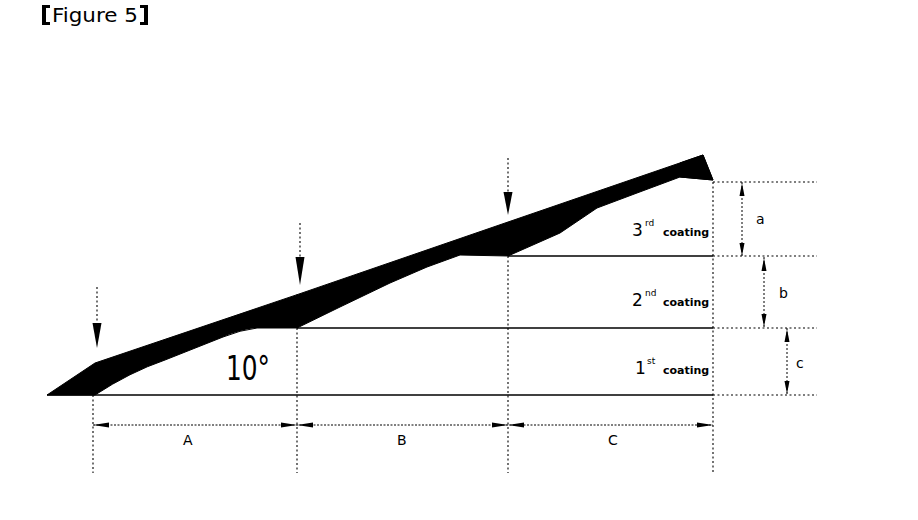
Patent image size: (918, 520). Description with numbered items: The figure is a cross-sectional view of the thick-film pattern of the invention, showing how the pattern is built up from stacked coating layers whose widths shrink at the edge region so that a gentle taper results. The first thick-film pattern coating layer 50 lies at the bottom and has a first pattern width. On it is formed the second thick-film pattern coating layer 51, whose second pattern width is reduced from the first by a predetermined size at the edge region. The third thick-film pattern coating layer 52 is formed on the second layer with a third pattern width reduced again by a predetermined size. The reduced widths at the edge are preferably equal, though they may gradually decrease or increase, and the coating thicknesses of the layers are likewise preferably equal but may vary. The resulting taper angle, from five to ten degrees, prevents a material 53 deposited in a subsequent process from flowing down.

The first thick-film pattern coating layer 50 is at (225, 340).
The second thick-film pattern coating layer 51 is at (415, 278).
The third thick-film pattern coating layer 52 is at (618, 217).
The material deposited in a subsequent process 53 is at (685, 157).